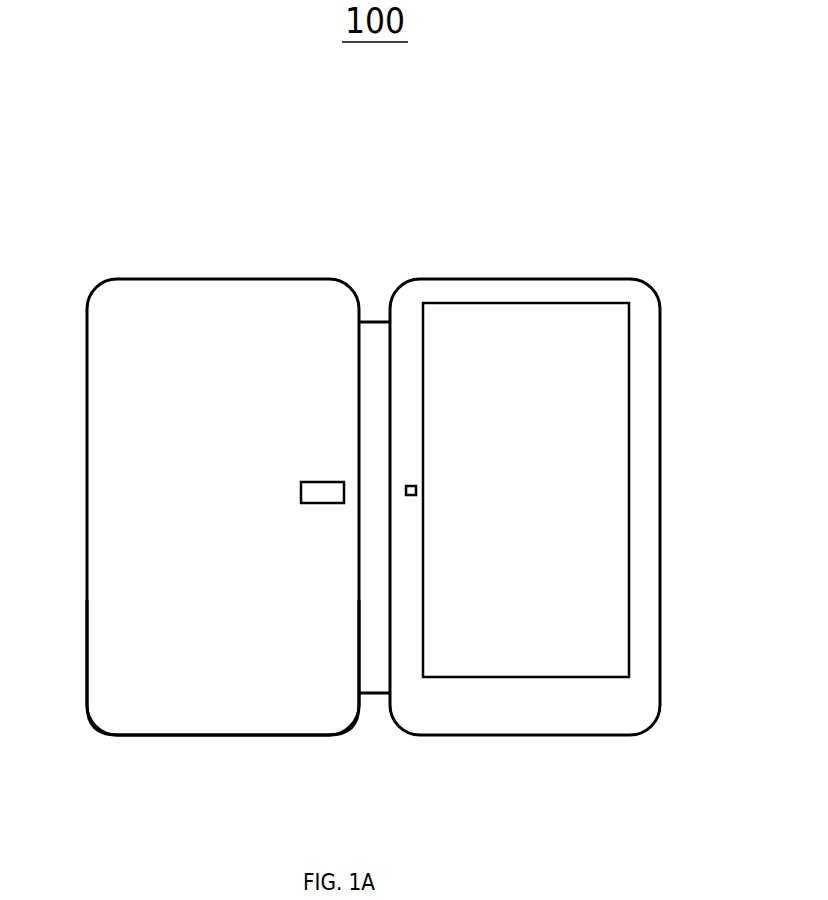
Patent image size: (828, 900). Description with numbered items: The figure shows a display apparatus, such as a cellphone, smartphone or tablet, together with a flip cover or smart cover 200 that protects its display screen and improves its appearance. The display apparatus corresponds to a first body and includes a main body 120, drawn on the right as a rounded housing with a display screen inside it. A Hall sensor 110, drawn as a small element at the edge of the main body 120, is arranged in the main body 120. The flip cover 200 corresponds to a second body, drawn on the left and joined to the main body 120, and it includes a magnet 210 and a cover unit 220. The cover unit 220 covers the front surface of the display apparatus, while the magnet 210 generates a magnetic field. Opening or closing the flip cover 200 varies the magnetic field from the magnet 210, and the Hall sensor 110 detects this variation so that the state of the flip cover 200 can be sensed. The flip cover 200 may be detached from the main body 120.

The flip cover 200 is at (222, 238).
The cover unit 220 is at (225, 736).
The magnet 210 is at (300, 491).
The main body 120 is at (521, 238).
The Hall sensor 110 is at (417, 491).